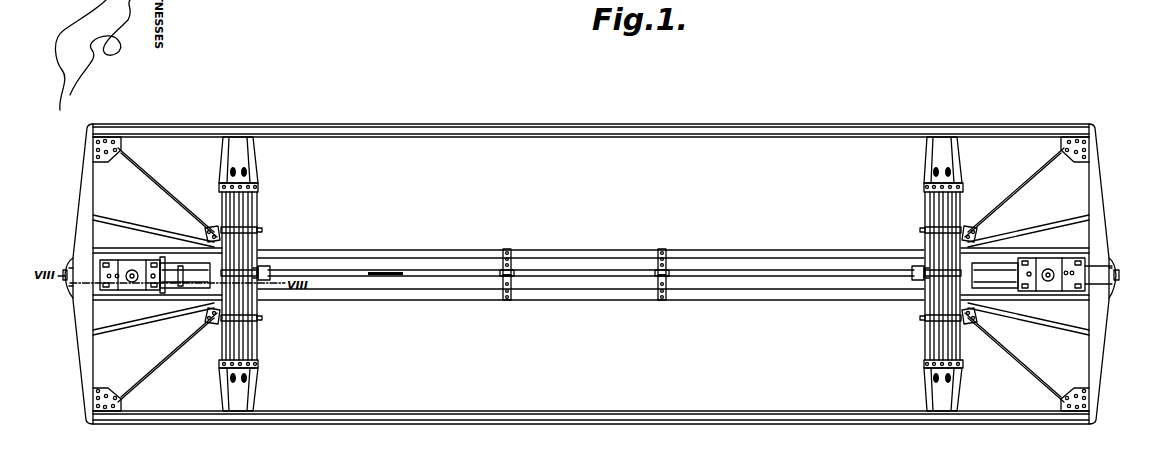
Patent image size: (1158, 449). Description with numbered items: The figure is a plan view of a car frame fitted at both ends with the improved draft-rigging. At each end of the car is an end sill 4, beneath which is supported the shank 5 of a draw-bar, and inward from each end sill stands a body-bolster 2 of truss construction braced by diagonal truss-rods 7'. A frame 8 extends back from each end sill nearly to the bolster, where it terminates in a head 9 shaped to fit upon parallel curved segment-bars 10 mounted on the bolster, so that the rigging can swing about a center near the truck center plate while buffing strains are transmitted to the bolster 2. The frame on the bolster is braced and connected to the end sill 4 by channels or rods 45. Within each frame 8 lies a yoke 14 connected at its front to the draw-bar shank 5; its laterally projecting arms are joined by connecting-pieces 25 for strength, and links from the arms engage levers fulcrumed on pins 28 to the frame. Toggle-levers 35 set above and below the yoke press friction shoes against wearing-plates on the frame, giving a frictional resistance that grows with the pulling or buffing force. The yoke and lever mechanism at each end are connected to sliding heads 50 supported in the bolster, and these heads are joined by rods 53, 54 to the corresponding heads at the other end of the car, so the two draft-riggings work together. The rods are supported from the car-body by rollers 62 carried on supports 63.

The body-bolster 2 is at (259, 214).
The end sill 4 is at (86, 359).
The shank of a draw-bar 5 is at (69, 289).
The diagonal truss-rods 7' is at (591, 274).
The frame 8 is at (100, 267).
The head 9 is at (255, 277).
The segment-bars 10 is at (212, 255).
The yoke 14 is at (125, 284).
The connecting-pieces 25 is at (132, 249).
The pins 28 is at (181, 262).
The toggle-levers 35 is at (136, 300).
The channels or rods 45 is at (144, 229).
The sliding head 50 is at (270, 267).
The rod 53 is at (342, 276).
The rod 54 is at (385, 278).
The rollers 62 is at (512, 268).
The supports 63 is at (510, 298).